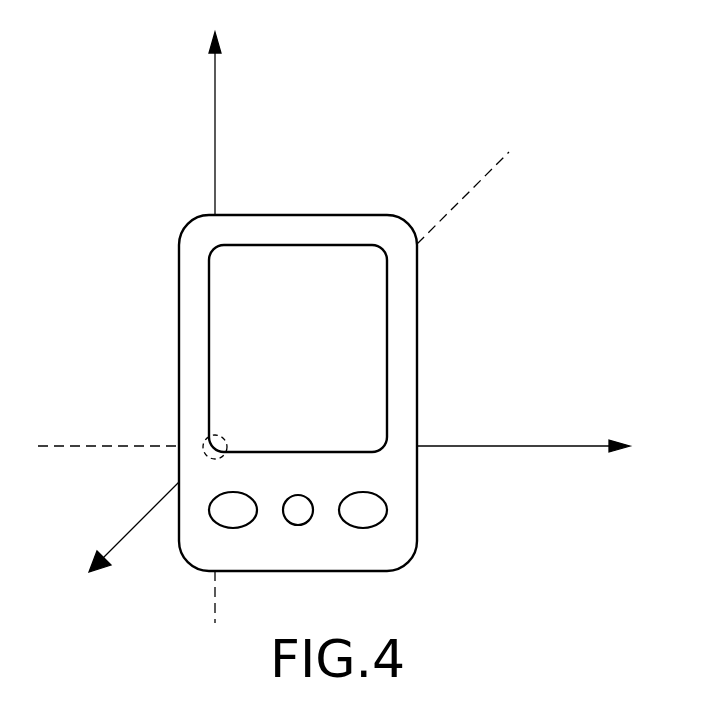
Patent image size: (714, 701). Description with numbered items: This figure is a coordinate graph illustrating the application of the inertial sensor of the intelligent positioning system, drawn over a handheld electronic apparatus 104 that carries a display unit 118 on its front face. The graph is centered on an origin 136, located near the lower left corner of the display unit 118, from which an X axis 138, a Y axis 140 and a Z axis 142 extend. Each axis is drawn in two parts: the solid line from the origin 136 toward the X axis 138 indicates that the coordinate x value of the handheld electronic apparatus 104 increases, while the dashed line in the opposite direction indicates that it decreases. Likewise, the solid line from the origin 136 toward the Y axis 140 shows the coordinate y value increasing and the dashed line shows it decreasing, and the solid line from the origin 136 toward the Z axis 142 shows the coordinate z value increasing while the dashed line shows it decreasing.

The handheld electronic apparatus 104 is at (417, 319).
The display unit 118 is at (356, 363).
The origin 136 is at (204, 441).
The X axis 138 is at (334, 434).
The Y axis 140 is at (237, 123).
The Z axis 142 is at (299, 387).